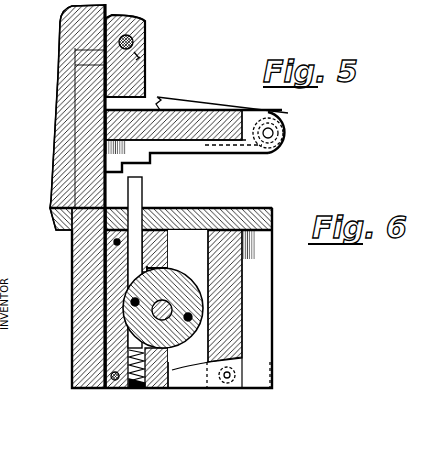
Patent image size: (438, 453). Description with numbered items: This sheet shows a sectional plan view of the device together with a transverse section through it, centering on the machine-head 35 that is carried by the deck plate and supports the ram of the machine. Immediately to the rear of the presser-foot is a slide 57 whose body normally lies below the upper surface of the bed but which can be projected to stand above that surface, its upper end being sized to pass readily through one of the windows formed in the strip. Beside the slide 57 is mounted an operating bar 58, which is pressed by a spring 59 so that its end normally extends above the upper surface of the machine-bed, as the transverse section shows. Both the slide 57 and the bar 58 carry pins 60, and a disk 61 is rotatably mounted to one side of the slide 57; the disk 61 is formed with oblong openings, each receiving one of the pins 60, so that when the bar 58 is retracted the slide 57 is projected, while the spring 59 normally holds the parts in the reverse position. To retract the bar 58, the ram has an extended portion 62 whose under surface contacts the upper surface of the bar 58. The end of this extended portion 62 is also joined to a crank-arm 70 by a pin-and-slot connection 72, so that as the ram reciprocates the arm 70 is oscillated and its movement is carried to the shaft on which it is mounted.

In FIG. 5, the machine-head 35 is at (60, 82).
In FIG. 6, the slide 57 is at (183, 240).
In FIG. 6, the operating bar 58 is at (137, 194).
In FIG. 6, the spring 59 is at (108, 368).
In FIG. 6, the pins 60 is at (135, 302).
In FIG. 6, the disk 61 is at (185, 288).
In FIG. 5, the extended portion 62 is at (150, 155).
In FIG. 5, the crank-arm 70 is at (181, 106).
In FIG. 5, the pin-and-slot connection 72 is at (276, 136).